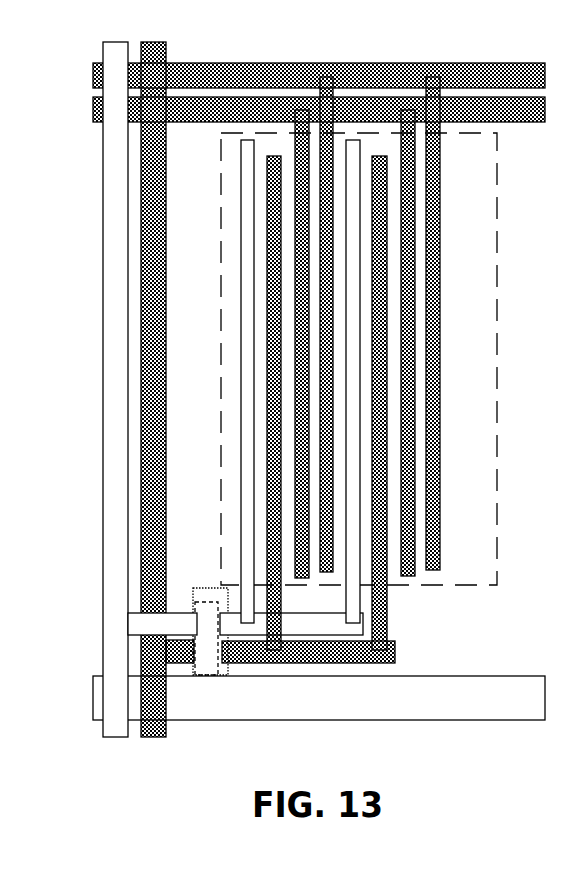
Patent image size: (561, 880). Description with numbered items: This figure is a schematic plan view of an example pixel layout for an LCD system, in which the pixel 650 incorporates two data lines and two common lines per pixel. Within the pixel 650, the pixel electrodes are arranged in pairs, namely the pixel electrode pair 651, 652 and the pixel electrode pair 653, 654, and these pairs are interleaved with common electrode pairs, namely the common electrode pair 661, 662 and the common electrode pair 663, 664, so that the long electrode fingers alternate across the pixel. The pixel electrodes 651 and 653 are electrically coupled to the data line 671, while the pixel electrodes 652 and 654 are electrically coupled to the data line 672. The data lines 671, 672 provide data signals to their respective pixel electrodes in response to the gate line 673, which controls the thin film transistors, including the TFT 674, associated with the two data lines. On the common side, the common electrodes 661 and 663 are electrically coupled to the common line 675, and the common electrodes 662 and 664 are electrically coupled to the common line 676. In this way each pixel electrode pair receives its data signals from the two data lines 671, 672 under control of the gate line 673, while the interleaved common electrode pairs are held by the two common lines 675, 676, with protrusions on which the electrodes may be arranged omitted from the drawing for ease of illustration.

The pixel 650 is at (481, 568).
The pixel electrode 651 is at (240, 212).
The pixel electrode 652 is at (268, 298).
The pixel electrode 653 is at (353, 212).
The pixel electrode 654 is at (378, 294).
The common electrode 661 is at (293, 384).
The common electrode 662 is at (322, 440).
The common electrode 663 is at (413, 384).
The common electrode 664 is at (440, 467).
The data line 671 is at (128, 499).
The data line 672 is at (165, 560).
The gate line 673 is at (422, 676).
The TFT 674 is at (205, 604).
The common line 675 is at (248, 105).
The common line 676 is at (403, 62).